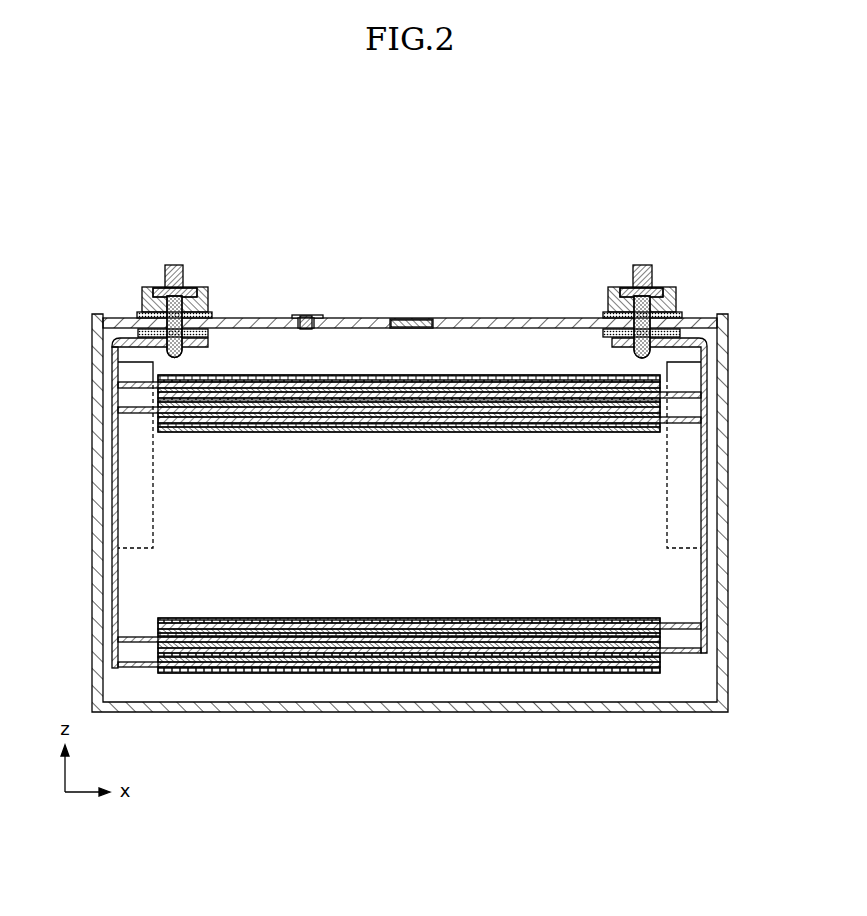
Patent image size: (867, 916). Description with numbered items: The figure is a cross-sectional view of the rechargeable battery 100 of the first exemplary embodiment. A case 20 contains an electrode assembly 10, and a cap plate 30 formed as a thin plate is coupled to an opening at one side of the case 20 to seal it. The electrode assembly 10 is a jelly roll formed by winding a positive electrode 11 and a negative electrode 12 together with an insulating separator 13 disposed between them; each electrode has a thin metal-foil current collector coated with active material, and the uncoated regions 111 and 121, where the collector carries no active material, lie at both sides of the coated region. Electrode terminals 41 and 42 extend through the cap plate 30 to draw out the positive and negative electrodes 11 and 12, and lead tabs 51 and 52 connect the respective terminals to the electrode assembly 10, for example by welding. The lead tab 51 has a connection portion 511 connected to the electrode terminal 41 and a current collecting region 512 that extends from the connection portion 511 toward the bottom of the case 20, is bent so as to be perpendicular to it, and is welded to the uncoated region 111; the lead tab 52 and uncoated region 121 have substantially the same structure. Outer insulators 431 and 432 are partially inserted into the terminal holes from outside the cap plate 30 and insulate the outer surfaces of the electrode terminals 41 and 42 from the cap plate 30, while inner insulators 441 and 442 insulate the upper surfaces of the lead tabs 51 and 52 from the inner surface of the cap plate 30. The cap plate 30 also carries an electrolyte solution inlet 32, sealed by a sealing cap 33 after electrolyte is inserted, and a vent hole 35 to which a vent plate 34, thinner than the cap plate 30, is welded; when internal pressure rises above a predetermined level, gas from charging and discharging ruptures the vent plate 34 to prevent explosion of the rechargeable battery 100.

The rechargeable battery 100 is at (368, 119).
The electrode assembly 10 is at (411, 572).
The positive electrode 11 is at (250, 673).
The negative electrode 12 is at (308, 673).
The separator 13 is at (425, 650).
The uncoated region 111 is at (140, 668).
The uncoated region 121 is at (690, 667).
The case 20 is at (586, 705).
The cap plate 30 is at (487, 318).
The electrolyte solution inlet 32 is at (316, 316).
The sealing cap 33 is at (303, 316).
The vent plate 34 is at (426, 320).
The vent hole 35 is at (400, 320).
The electrode terminal 41 is at (171, 256).
The electrode terminal 42 is at (646, 256).
The outer insulator 431 is at (137, 313).
The outer insulator 432 is at (603, 312).
The inner insulator 441 is at (138, 333).
The inner insulator 442 is at (683, 315).
The lead tab 51 is at (155, 503).
The connection portion 511 is at (210, 342).
The current collecting region 512 is at (115, 448).
The lead tab 52 is at (718, 377).